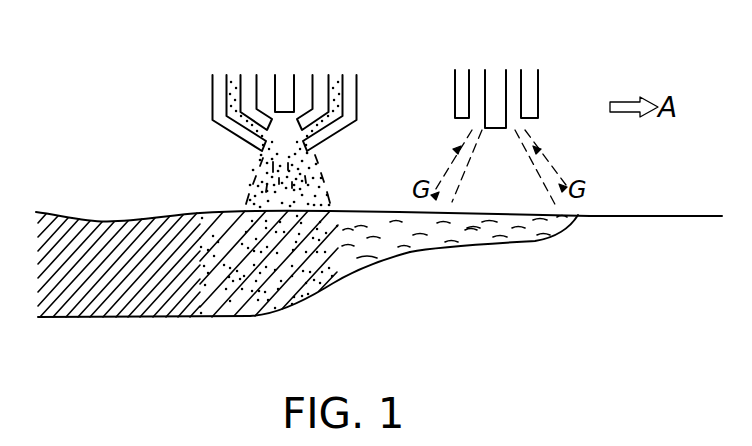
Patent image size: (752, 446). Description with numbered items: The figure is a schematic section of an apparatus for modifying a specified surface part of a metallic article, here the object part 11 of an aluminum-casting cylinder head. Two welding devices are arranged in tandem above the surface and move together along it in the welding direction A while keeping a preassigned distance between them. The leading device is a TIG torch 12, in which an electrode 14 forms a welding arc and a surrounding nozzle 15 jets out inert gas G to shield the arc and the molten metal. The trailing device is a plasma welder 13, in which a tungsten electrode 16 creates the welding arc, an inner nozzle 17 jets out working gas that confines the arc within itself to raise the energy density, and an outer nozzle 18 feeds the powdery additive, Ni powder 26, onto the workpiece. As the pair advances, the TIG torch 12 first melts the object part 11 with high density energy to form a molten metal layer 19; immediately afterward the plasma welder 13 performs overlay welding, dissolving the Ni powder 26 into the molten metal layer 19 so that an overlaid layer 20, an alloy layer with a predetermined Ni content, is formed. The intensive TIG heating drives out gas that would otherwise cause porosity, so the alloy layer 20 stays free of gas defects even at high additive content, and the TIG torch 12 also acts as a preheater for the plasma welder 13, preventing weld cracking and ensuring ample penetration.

The object part 11 is at (589, 201).
The TIG torch 12 is at (495, 73).
The plasma welder 13 is at (239, 82).
The electrode 14 is at (483, 77).
The nozzle 15 is at (455, 110).
The electrode 16 is at (275, 76).
The inner nozzle 17 is at (233, 76).
The outer nozzle 18 is at (212, 100).
The molten metal layer 19 is at (517, 234).
The overlaid layer 20 is at (311, 280).
The Ni powder 26 is at (333, 77).